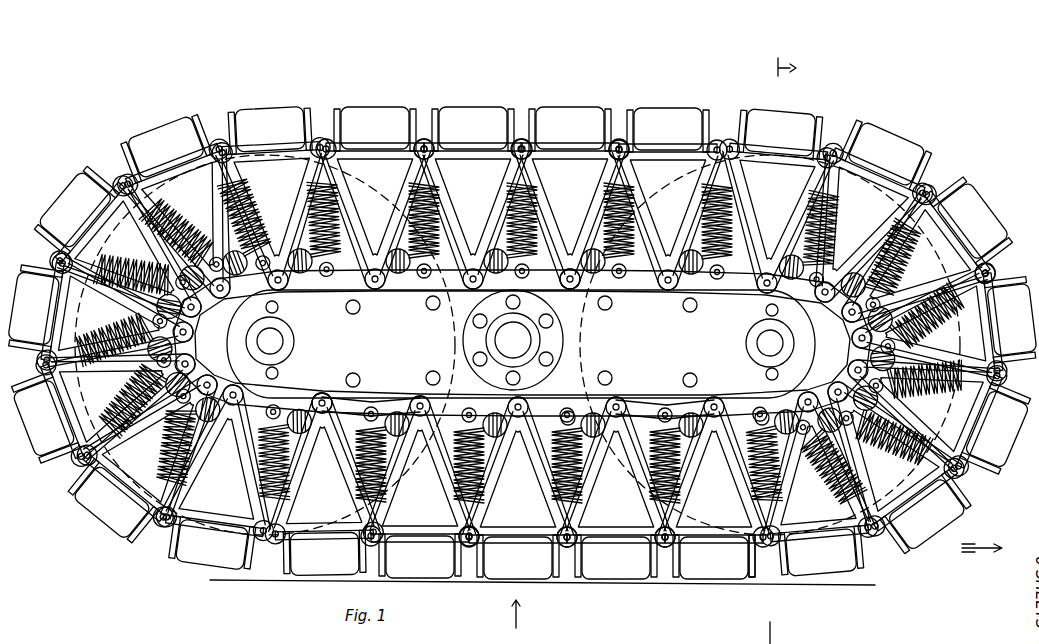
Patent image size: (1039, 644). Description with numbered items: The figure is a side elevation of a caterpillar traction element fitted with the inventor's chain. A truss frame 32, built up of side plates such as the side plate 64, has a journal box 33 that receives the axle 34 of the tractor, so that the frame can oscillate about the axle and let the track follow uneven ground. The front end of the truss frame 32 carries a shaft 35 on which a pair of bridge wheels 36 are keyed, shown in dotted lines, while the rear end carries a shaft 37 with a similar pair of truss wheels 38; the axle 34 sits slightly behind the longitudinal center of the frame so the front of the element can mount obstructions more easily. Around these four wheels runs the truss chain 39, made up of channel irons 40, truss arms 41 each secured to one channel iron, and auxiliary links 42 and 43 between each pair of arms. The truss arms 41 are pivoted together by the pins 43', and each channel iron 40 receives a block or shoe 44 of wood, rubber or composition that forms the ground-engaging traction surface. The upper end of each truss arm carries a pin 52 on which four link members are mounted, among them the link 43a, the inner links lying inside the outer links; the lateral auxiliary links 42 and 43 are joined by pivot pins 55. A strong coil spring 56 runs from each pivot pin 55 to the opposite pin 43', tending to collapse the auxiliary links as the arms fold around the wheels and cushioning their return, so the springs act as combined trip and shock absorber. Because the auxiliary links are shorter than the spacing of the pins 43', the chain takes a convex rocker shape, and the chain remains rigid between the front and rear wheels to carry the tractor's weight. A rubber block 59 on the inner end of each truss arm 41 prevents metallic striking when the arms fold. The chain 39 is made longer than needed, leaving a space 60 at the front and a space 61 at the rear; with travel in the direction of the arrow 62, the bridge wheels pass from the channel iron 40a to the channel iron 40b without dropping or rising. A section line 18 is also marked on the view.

The section line 18 is at (654, 340).
The truss frame 32 is at (521, 344).
The journal box 33 is at (505, 322).
The axle 34 is at (520, 334).
The shaft 35 is at (764, 341).
The bridge wheels 36 is at (920, 470).
The shaft 37 is at (278, 343).
The truss wheels 38 is at (321, 468).
The truss chain 39 is at (700, 598).
The channel irons 40 is at (614, 576).
The channel iron 40a is at (714, 557).
The channel iron 40b is at (820, 551).
The truss arms 41 is at (662, 472).
The auxiliary link 42 is at (392, 397).
The auxiliary link 43 is at (547, 392).
The pins 43' is at (565, 575).
The link member 43a is at (764, 578).
The block or shoe 44 is at (308, 568).
The pin 52 is at (576, 288).
The pivot pins 55 is at (568, 411).
The coil spring 56 is at (560, 458).
The rubber block 59 is at (517, 345).
The space 60 is at (965, 330).
The space 61 is at (66, 316).
The arrow 62 is at (976, 552).
The side plate 64 is at (374, 343).